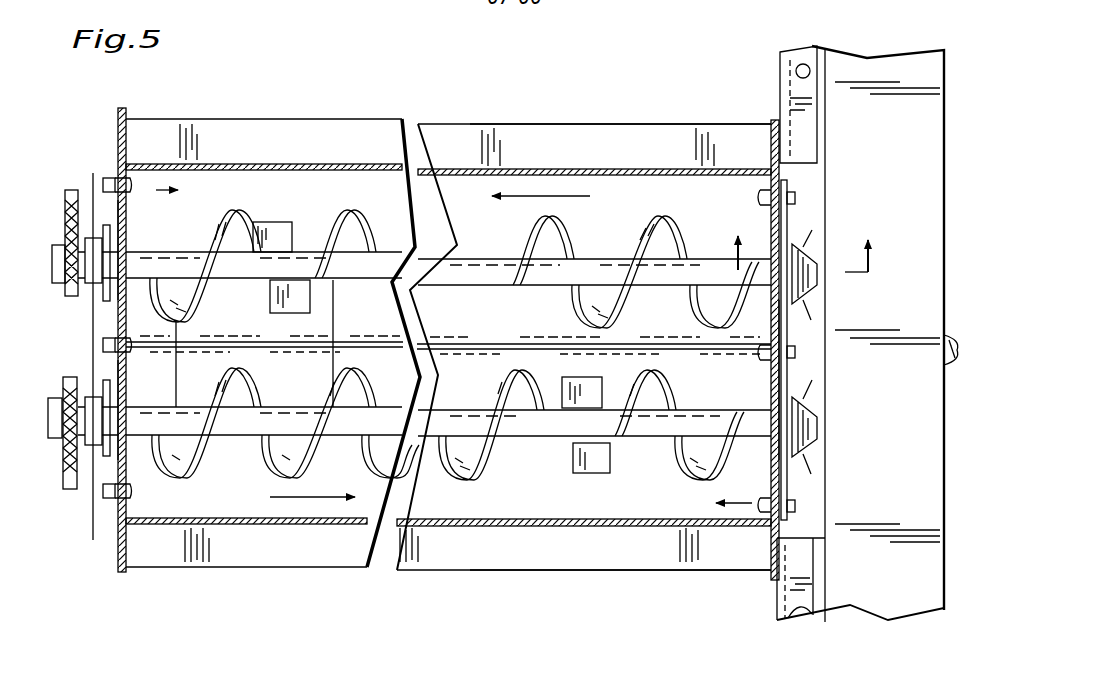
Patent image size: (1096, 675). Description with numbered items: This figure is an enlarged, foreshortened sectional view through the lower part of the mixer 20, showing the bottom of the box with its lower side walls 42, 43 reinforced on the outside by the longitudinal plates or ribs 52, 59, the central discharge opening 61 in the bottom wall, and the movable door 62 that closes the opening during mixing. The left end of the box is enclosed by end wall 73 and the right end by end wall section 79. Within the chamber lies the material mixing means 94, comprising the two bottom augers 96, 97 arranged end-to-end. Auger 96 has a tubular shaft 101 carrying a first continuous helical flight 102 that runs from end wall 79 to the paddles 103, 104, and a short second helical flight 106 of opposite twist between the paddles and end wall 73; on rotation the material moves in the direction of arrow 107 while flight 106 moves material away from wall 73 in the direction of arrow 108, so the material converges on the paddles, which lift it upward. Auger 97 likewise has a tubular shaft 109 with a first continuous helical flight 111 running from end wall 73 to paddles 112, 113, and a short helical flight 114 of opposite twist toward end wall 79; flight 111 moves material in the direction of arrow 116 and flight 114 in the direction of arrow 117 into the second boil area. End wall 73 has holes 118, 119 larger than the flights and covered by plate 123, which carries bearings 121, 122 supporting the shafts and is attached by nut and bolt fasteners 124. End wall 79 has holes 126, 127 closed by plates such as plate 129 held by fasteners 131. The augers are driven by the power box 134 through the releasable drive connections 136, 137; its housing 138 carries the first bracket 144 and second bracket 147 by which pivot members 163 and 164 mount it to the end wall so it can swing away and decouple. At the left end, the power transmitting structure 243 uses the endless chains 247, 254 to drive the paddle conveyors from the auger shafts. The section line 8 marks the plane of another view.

The mixer 20 is at (241, 100).
The lower side wall 42 is at (297, 525).
The lower side wall 43 is at (291, 164).
The longitudinal plate or reinforcing rib 52 is at (540, 567).
The longitudinal plate or reinforcing rib 59 is at (572, 124).
The central discharge opening 61 is at (340, 340).
The movable door 62 is at (264, 385).
The end wall 73 is at (117, 129).
The end wall section 79 is at (790, 120).
The material mixing means 94 is at (378, 216).
The bottom auger 96 is at (686, 226).
The bottom auger 97 is at (666, 388).
The tubular shaft 101 is at (560, 284).
The first continuous helical flight 102 is at (558, 238).
The paddle 103 is at (276, 222).
The paddle 104 is at (270, 310).
The second helical flight 106 is at (216, 224).
The arrow 107 is at (565, 196).
The arrow 108 is at (160, 190).
The tubular shaft 109 is at (463, 408).
The first continuous helical flight 111 is at (462, 472).
The paddle 112 is at (588, 372).
The paddle 113 is at (578, 464).
The short helical flight 114 is at (684, 472).
The arrow 116 is at (270, 497).
The arrow 117 is at (740, 503).
The hole 118 is at (124, 222).
The hole 119 is at (124, 375).
The bearing 121 is at (92, 288).
The bearing 122 is at (94, 400).
The plate 123 is at (96, 506).
The nut and bolt fasteners 124 is at (103, 183).
The hole 126 is at (772, 320).
The hole 127 is at (776, 460).
The plate 129 is at (787, 224).
The fasteners 131 is at (797, 200).
The power transmission unit or power box 134 is at (948, 174).
The releasable drive connection 136 is at (824, 294).
The releasable drive connection 137 is at (823, 400).
The housing 138 is at (884, 378).
The first bracket 144 is at (795, 52).
The second bracket 147 is at (784, 568).
The pivot member 163 is at (796, 72).
The pivot member 164 is at (790, 600).
The power transmitting structure 243 is at (50, 148).
The endless link chain 247 is at (66, 240).
The endless chain 254 is at (70, 470).
The section line 8- 8 is at (807, 240).